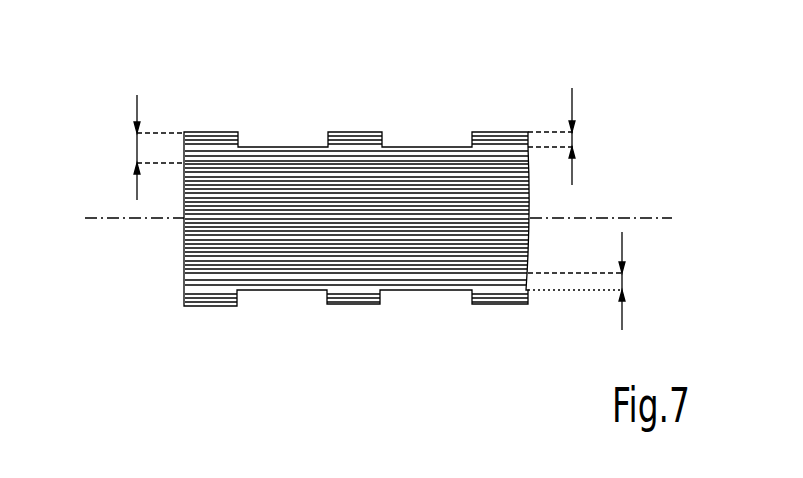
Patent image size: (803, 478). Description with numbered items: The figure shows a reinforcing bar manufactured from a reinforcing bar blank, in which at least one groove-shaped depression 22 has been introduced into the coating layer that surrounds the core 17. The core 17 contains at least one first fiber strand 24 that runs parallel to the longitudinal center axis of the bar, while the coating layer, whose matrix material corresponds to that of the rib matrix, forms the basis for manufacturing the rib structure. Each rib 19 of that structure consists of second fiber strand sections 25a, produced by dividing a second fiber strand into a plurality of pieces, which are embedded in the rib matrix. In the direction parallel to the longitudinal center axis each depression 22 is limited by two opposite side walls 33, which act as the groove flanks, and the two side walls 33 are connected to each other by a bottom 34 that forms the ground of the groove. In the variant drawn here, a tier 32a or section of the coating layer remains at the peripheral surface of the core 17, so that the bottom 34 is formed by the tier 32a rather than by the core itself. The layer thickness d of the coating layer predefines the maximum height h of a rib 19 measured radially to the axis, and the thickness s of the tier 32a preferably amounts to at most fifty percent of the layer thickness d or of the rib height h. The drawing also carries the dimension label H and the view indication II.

The core 17 is at (533, 197).
The rib 19 is at (527, 300).
The depression 22 is at (308, 145).
The first fiber strand 24 is at (267, 202).
The fiber strand section 25a is at (215, 307).
The tier 32a is at (270, 276).
The side wall 33 is at (470, 143).
The bottom 34 is at (400, 297).
The layer thickness d is at (137, 150).
The height h is at (573, 141).
The thickness s is at (625, 281).
The center axis H is at (102, 221).
The view direction arrow II is at (611, 86).